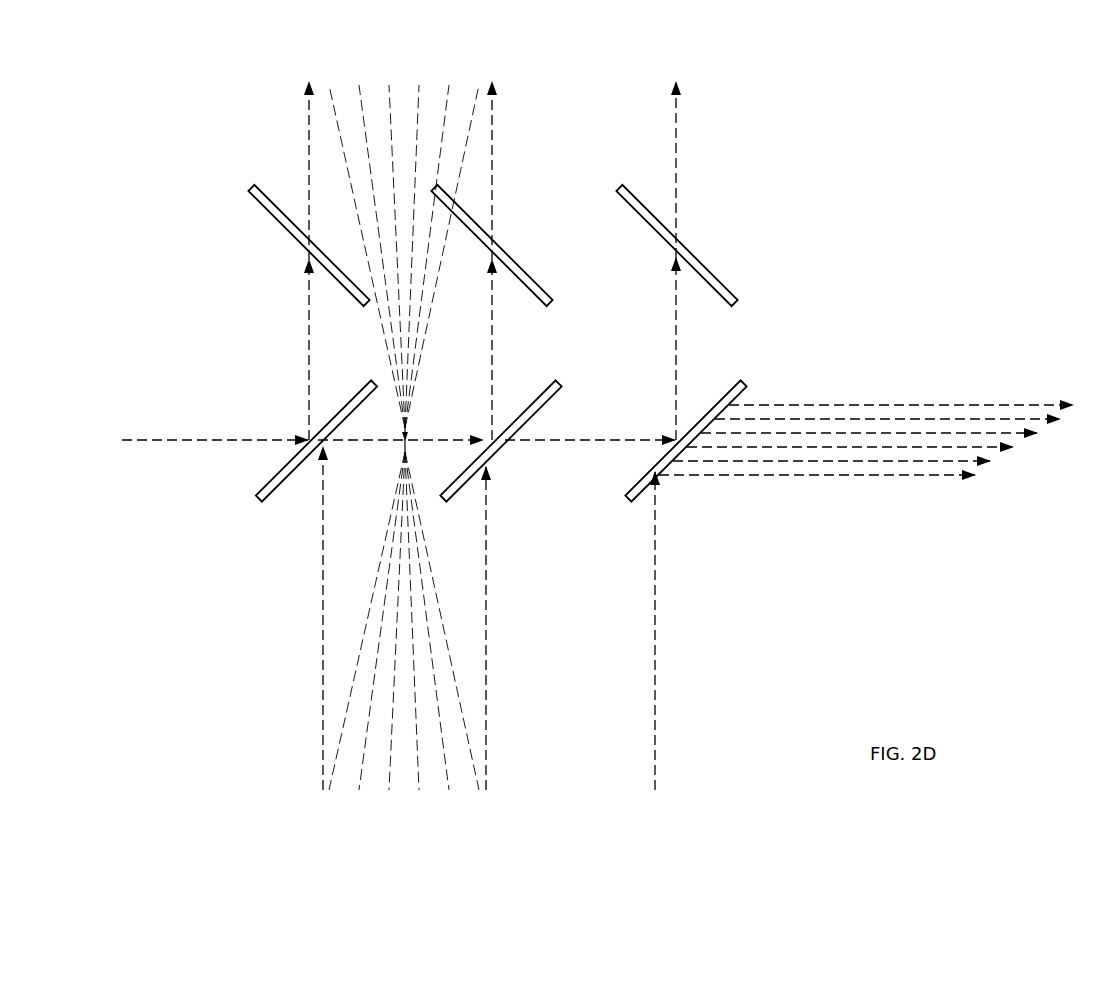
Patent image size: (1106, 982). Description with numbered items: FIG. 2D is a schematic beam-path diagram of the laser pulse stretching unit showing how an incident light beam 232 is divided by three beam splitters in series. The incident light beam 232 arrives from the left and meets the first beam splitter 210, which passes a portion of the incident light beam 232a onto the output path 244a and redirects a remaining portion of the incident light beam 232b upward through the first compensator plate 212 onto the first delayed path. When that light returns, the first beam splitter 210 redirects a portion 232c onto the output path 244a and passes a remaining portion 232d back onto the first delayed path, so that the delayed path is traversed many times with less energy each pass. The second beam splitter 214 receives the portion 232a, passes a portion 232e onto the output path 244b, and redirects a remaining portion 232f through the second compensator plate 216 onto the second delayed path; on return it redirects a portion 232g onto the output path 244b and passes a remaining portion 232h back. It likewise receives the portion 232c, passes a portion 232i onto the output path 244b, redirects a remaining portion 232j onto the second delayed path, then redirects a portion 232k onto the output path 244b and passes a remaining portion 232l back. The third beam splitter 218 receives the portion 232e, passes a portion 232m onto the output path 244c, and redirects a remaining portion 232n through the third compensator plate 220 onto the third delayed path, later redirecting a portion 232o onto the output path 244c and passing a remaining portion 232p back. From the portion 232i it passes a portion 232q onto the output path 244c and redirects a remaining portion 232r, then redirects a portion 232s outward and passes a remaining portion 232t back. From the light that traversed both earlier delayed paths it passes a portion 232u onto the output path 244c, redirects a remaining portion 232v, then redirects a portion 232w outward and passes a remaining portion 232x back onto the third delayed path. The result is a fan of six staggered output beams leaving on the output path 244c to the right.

The first beam splitter 210 is at (258, 500).
The first compensator plate 212 is at (251, 186).
The second beam splitter 214 is at (444, 502).
The second compensator plate 216 is at (511, 262).
The third beam splitter 218 is at (743, 381).
The third compensator plate 220 is at (700, 260).
The incident light beam 232 is at (152, 442).
The portion of the incident light beam 232a is at (400, 405).
The remaining portion of the incident light beam 232b is at (253, 436).
The portion of the incident light beam that traversed the first delayed path 232c is at (442, 438).
The remaining portion of the incident light beam that traversed the first delayed pa 232d is at (306, 124).
The portion of the incident light beam passed onto the second output path 232e is at (590, 402).
The remaining portion of the incident light beam redirected onto the second delayed 232f is at (573, 436).
The portion of the incident light beam that traversed the second delayed path 232g is at (590, 402).
The remaining portion of the incident light beam that traversed the second delayed p 232h is at (573, 436).
The portion of the incident light beam that traversed the first delayed path and pas 232i is at (590, 402).
The remaining portion of the incident light beam that traversed the first delayed pa 232j is at (573, 436).
The portion of the incident light beam that traversed the second delayed path 232k is at (603, 438).
The remaining portion of the incident light beam that traversed the second delayed p 232l is at (494, 122).
The portion of the incident light beam passed onto the third output path 232m is at (1013, 404).
The remaining portion of the incident light beam redirected onto the third delayed p 232n is at (756, 433).
The portion of the incident light beam that traversed the third delayed path 232o is at (954, 417).
The remaining portion of the incident light beam that traversed the third delayed pa 232p is at (756, 433).
The portion of the incident light beam that traversed the first delayed path and pas 232q is at (880, 432).
The remaining portion of the incident light beam redirected onto the third delayed p 232r is at (756, 433).
The portion of the incident light beam that traversed the third delayed path 232s is at (818, 448).
The remaining portion of the incident light beam that traversed the third delayed pa 232t is at (756, 433).
The portion of the incident light beam that traversed both delayed paths and passed 232u is at (897, 463).
The remaining portion of the incident light beam redirected onto the third delayed p 232v is at (756, 433).
The portion of the incident light beam that traversed the third delayed path 232w is at (953, 477).
The remaining portion of the incident light beam that traversed the third delayed pa 232x is at (678, 727).
The output path 244a is at (350, 449).
The output path 244b is at (576, 457).
The output path 244c is at (760, 503).